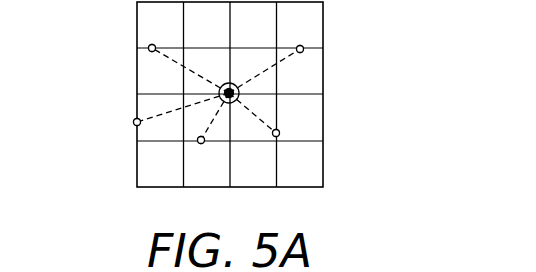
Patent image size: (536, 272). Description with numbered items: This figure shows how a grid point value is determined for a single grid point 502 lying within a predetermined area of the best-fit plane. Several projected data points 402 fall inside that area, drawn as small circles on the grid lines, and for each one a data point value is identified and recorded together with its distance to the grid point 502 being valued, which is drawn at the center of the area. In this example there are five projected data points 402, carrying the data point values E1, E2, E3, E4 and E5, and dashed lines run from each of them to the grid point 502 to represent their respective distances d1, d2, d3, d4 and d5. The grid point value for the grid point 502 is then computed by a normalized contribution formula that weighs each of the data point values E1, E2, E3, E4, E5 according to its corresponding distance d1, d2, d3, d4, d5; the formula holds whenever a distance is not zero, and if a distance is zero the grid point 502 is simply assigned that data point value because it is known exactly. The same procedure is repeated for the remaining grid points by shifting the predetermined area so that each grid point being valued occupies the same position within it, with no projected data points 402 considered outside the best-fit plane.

The projected data point 402 is at (149, 46).
The grid point 502 is at (239, 90).
The data point value E1 is at (159, 33).
The data point value E2 is at (121, 107).
The data point value E3 is at (203, 158).
The data point value E4 is at (290, 152).
The data point value E5 is at (299, 32).
The distance d1 is at (190, 69).
The distance d2 is at (183, 101).
The distance d3 is at (220, 116).
The distance d4 is at (256, 113).
The distance d5 is at (264, 66).